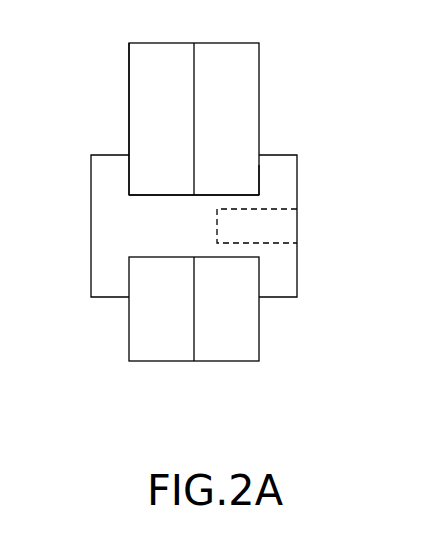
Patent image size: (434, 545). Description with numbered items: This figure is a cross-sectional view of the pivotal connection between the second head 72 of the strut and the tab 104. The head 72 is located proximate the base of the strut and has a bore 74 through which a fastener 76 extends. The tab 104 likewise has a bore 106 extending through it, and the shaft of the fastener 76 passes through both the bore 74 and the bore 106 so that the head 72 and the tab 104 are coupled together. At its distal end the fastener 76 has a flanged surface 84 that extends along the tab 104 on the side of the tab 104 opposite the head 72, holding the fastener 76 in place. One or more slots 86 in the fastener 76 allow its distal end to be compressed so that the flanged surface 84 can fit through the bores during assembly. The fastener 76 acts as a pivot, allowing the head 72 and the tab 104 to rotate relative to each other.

The second head 72 is at (129, 95).
The bore 74 is at (163, 195).
The fastener 76 is at (108, 223).
The flanged surface 84 is at (283, 172).
The slots 86 is at (283, 230).
The tab 104 is at (232, 80).
The bore 106 is at (243, 195).